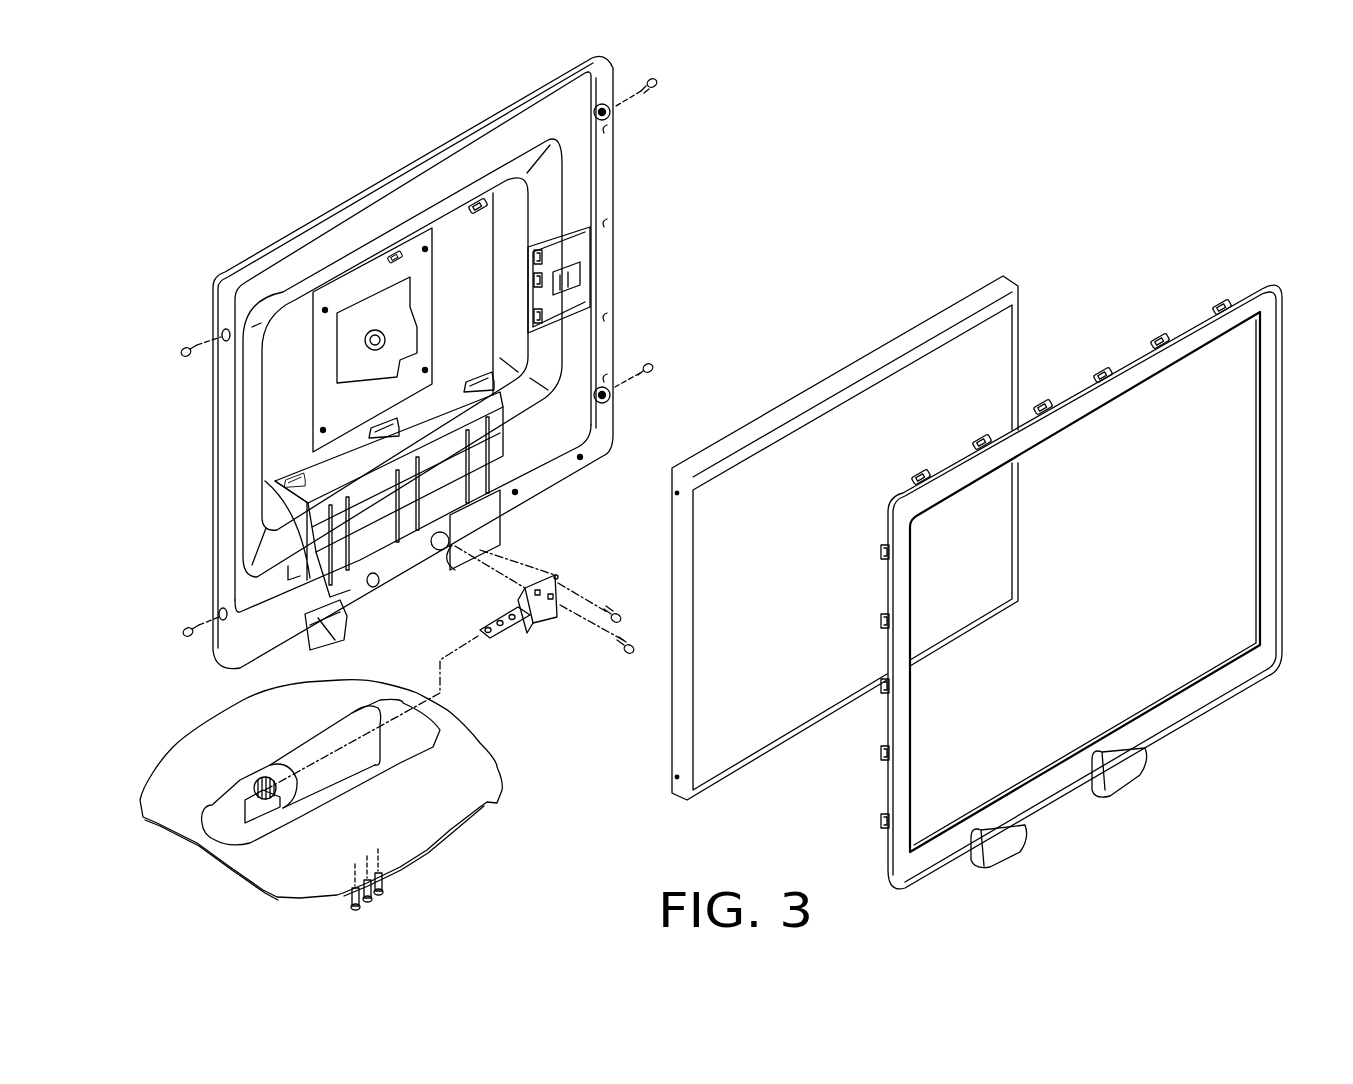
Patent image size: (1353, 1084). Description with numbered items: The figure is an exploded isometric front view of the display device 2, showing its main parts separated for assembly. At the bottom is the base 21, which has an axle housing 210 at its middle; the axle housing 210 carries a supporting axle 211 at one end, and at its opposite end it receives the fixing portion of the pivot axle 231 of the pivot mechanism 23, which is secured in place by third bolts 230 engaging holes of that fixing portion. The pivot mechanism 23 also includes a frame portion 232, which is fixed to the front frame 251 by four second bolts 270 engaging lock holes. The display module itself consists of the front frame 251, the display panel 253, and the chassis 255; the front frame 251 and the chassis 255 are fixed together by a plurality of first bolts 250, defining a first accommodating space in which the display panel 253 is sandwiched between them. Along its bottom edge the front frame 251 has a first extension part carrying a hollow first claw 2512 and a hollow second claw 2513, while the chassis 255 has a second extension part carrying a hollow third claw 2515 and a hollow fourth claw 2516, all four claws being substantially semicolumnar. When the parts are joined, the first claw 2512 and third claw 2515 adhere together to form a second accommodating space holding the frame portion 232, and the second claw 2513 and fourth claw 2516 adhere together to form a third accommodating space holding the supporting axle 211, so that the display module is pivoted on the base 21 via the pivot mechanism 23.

The display device 2 is at (293, 123).
The base 21 is at (343, 790).
The axle housing 210 is at (310, 758).
The supporting axle 211 is at (262, 779).
The pivot mechanism 23 is at (444, 668).
The third bolts 230 is at (383, 888).
The pivot axle 231 is at (499, 636).
The frame portion 232 is at (548, 612).
The first bolts 250 is at (660, 86).
The front frame 251 is at (1097, 587).
The first claw 2512 is at (1124, 774).
The second claw 2513 is at (1000, 843).
The third claw 2515 is at (440, 568).
The fourth claw 2516 is at (300, 665).
The display panel 253 is at (883, 360).
The chassis 255 is at (439, 372).
The second bolts 270 is at (615, 611).